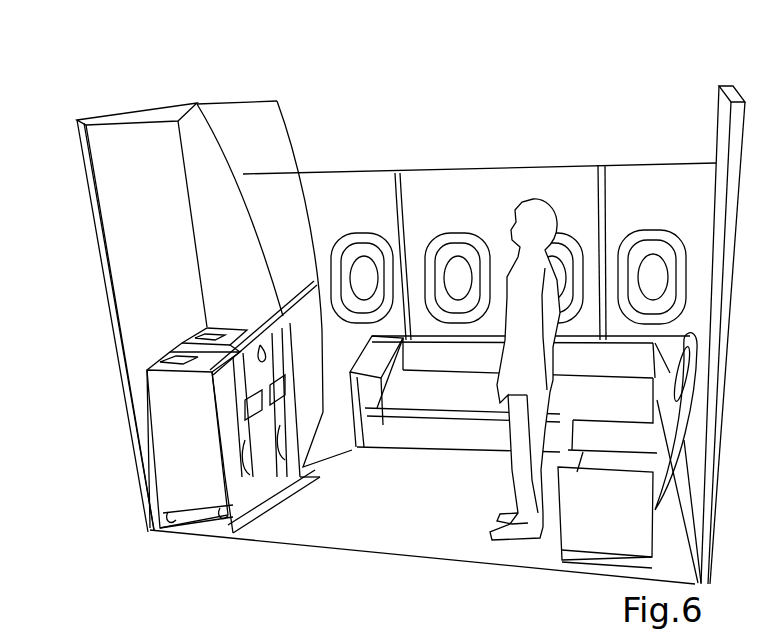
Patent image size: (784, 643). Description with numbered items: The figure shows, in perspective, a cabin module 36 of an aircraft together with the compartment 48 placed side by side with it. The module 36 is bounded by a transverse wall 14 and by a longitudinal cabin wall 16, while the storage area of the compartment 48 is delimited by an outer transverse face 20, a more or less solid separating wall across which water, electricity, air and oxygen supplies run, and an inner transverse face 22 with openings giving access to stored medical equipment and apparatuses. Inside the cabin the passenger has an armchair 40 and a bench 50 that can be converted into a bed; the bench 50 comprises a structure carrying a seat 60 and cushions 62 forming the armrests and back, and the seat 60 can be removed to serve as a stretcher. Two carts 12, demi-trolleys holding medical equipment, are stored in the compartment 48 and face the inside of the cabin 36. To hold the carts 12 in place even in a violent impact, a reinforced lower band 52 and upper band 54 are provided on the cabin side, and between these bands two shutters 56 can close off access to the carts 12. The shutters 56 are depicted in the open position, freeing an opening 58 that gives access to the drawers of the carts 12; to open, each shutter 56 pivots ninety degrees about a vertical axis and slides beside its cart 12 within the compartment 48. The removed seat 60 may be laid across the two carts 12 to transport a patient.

The cart 12 is at (198, 330).
The transverse wall 14 is at (707, 130).
The cabin wall 16 is at (413, 182).
The outer transverse face 20 is at (148, 108).
The inner transverse face 22 is at (245, 128).
The module 36 is at (508, 150).
The armchair 40 is at (635, 527).
The compartment 48 is at (113, 106).
The bench 50 is at (625, 357).
The lower band 52 is at (258, 505).
The upper band 54 is at (222, 400).
The shutter 56 is at (258, 483).
The opening 58 is at (258, 335).
The seat 60 is at (435, 395).
The cushions 62 is at (372, 365).